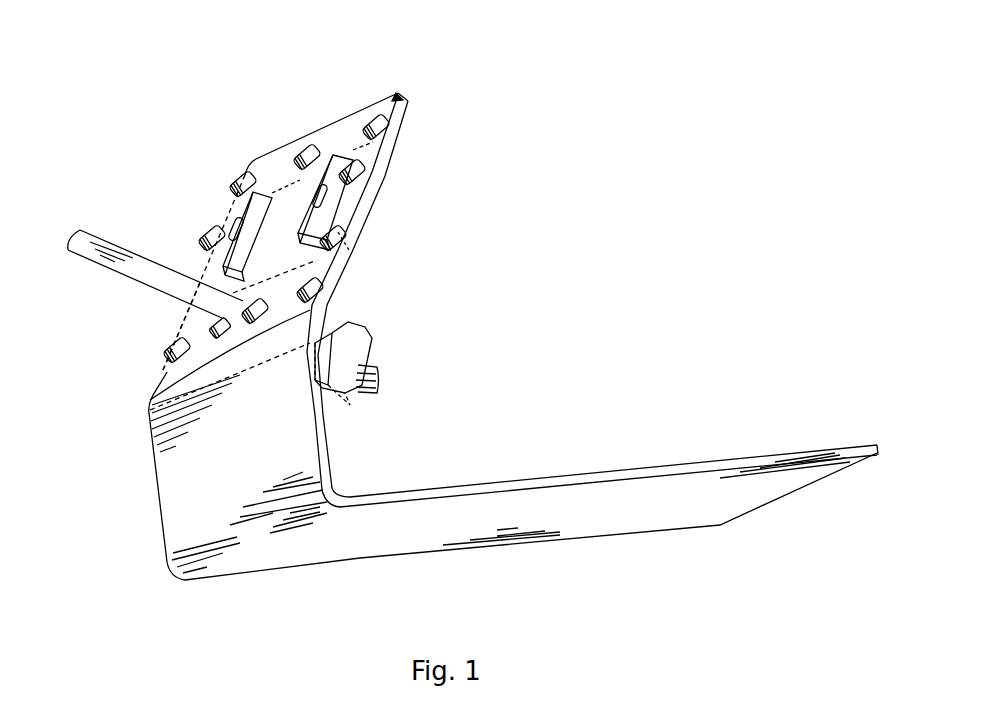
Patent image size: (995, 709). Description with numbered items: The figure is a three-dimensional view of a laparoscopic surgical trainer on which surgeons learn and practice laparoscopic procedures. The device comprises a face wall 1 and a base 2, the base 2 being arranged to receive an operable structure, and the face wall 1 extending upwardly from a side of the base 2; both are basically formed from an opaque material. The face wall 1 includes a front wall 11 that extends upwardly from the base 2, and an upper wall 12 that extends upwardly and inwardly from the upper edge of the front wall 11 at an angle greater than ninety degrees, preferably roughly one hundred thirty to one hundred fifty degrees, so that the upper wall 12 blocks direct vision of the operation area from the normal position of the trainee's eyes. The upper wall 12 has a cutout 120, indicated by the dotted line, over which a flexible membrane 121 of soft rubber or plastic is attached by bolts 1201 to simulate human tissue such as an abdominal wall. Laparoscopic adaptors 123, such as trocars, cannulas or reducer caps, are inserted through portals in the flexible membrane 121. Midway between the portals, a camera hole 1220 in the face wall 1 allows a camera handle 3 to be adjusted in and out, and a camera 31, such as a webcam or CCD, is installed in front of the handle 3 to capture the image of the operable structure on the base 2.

The face wall 1 is at (105, 141).
The front wall 11 is at (190, 465).
The upper wall 12 is at (415, 107).
The cutout 120 is at (288, 182).
The flexible membrane 121 is at (272, 168).
The laparoscopic adaptor 123 is at (230, 235).
The bolts 1201 is at (347, 241).
The camera hole 1220 is at (167, 370).
The base 2 is at (563, 510).
The camera handle 3 is at (135, 275).
The camera 31 is at (358, 340).